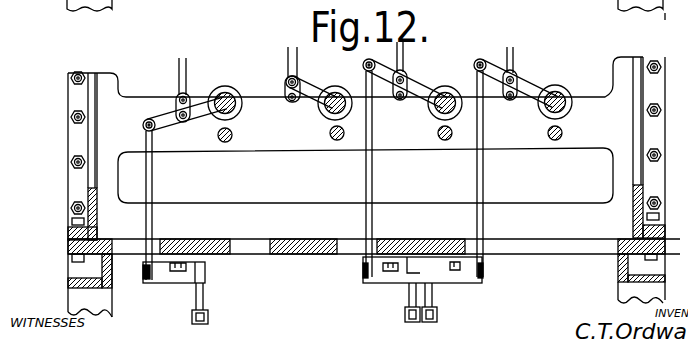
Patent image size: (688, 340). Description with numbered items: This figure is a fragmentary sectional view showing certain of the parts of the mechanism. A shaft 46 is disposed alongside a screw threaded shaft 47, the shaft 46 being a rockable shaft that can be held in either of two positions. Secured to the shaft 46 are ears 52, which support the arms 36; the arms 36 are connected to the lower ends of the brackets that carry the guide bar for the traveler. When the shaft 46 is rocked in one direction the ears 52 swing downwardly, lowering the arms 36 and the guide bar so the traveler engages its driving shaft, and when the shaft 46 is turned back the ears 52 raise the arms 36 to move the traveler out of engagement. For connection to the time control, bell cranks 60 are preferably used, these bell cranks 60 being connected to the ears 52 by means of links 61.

The arms 36 is at (188, 68).
The ears 52 is at (200, 105).
The shaft 46 is at (234, 108).
The screw threaded shaft 47 is at (330, 134).
The links 61 is at (153, 198).
The bell cranks 60 is at (204, 297).